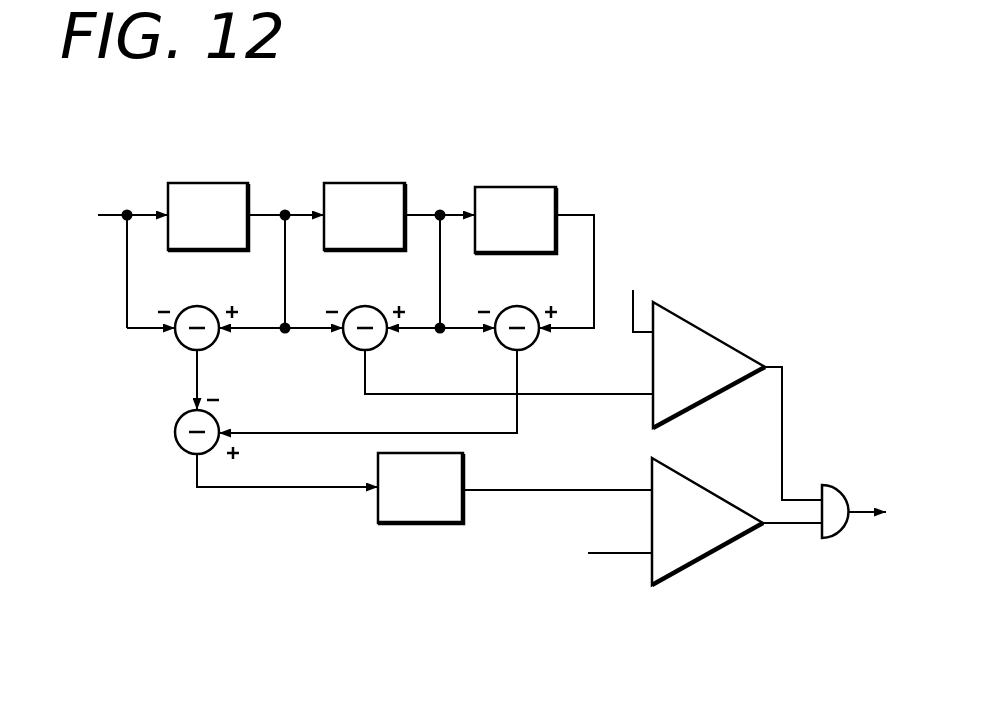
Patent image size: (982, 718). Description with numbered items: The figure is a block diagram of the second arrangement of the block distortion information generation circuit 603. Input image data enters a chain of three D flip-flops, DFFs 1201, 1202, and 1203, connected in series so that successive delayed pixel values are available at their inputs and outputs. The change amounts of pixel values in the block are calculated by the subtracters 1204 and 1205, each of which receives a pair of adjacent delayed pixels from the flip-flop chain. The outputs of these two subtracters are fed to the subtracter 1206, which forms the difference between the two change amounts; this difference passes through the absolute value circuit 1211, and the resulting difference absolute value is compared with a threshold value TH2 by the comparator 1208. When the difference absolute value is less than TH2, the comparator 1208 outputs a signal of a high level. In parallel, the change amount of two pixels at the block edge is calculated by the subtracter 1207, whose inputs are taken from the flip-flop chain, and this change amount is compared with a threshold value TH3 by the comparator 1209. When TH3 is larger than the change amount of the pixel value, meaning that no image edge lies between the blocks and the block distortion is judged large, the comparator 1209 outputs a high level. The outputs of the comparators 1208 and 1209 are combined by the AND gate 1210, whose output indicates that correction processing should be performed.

The block distortion information generation circuit 603 is at (326, 114).
The DFF 1201 is at (228, 183).
The DFF 1202 is at (388, 183).
The DFF 1203 is at (532, 187).
The subtracter 1204 is at (207, 306).
The subtracter 1205 is at (525, 308).
The subtracter 1206 is at (215, 416).
The subtracter 1207 is at (375, 306).
The comparator 1208 is at (712, 487).
The comparator 1209 is at (716, 333).
The AND gate 1210 is at (838, 490).
The absolute value circuit 1211 is at (465, 462).